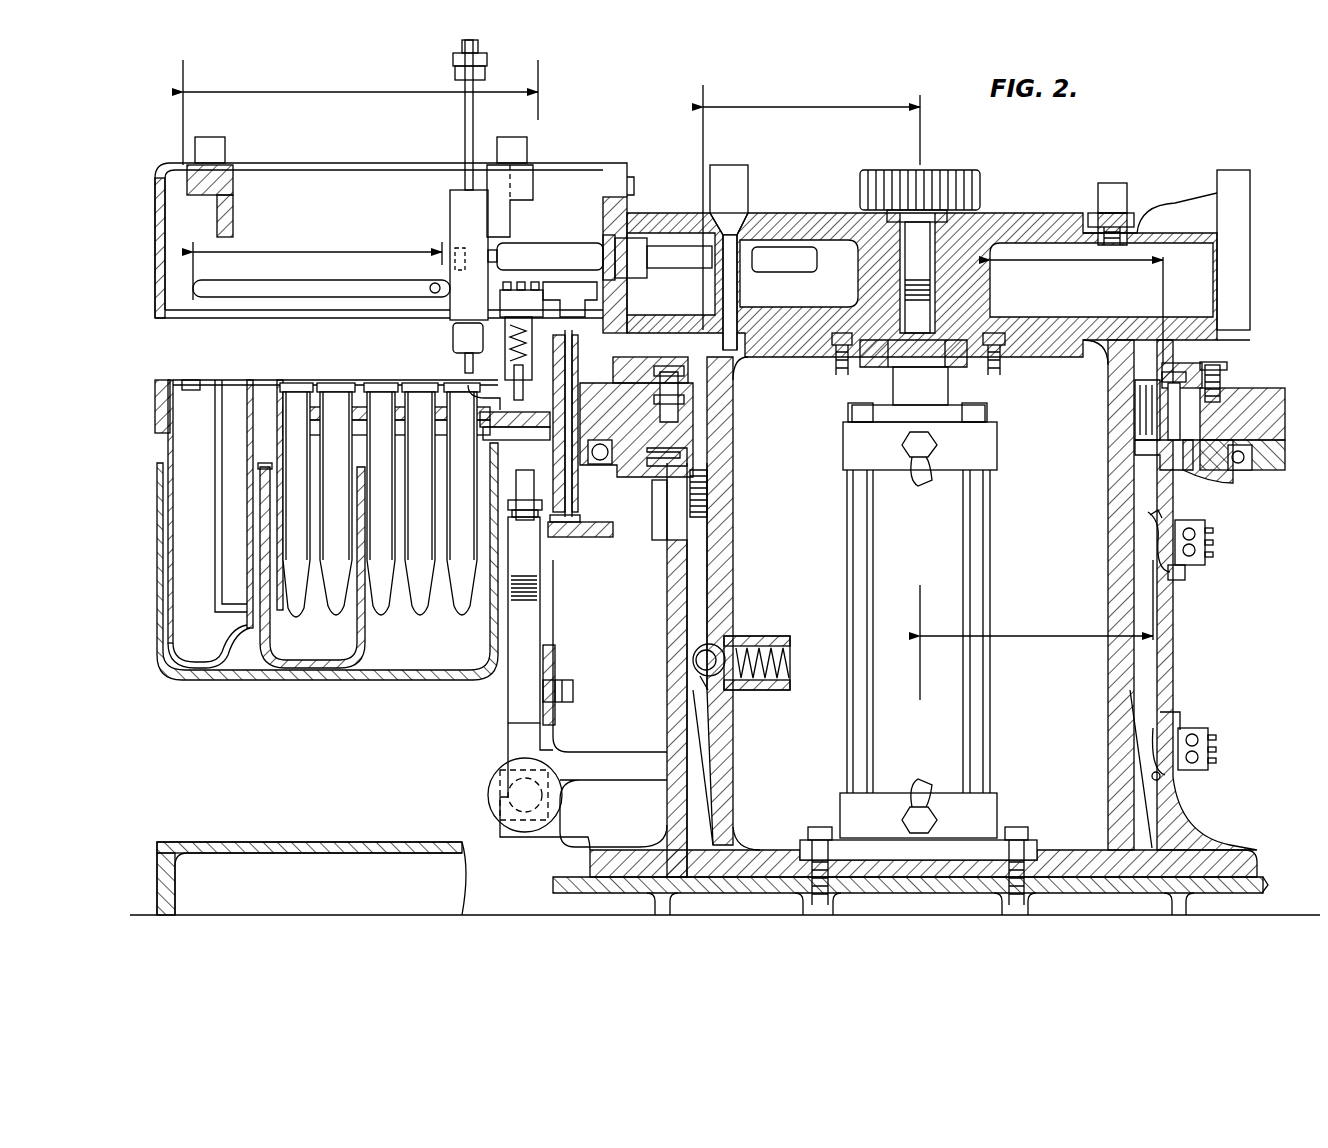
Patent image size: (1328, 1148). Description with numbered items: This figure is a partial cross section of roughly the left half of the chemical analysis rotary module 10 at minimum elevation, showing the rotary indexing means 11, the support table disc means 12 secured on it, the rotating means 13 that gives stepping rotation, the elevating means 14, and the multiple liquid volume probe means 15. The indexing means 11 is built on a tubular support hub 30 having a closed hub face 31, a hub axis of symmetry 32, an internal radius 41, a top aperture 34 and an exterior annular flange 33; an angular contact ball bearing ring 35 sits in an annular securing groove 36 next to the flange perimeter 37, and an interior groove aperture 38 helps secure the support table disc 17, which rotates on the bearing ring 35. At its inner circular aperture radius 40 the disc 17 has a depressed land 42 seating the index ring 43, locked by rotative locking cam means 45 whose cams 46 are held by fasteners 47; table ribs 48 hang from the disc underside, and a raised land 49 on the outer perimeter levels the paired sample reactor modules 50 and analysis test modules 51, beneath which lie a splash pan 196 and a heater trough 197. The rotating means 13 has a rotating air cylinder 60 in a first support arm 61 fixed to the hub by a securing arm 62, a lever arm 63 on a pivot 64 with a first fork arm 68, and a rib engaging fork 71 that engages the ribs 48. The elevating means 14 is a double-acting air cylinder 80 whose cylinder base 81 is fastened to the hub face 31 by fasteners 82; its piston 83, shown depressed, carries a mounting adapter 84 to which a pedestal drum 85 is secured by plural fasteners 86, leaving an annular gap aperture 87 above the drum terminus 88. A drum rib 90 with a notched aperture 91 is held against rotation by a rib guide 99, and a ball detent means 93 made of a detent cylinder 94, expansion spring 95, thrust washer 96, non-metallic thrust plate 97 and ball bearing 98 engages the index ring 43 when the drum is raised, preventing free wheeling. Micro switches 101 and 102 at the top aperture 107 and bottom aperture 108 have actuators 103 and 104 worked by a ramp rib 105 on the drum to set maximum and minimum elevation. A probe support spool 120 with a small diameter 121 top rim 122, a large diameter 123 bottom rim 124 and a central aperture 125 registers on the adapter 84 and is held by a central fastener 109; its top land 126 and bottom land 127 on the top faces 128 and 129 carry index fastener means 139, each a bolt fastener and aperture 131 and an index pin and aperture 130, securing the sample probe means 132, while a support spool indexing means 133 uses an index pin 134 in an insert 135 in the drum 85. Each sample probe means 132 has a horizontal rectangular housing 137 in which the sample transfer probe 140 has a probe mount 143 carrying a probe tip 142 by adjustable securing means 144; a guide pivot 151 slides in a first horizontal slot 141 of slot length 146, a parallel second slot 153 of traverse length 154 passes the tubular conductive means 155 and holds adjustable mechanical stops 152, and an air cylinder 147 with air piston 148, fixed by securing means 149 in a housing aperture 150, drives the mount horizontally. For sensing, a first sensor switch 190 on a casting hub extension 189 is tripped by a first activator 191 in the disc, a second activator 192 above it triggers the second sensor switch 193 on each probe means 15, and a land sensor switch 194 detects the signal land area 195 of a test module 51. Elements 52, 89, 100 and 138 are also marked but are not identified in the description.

The chemical analysis rotary module 10 is at (1165, 143).
The rotary indexing means 11 is at (1210, 608).
The support table disc means 12 is at (198, 367).
The rotating means 13 is at (498, 703).
The elevating means 14 is at (1005, 398).
The multiple liquid volume probe means 15 is at (325, 180).
The support table disc 17 is at (1180, 440).
The tubular support hub 30 is at (1173, 680).
The closed hub face 31 is at (1040, 870).
The tubular hub axis of symmetry 32 is at (921, 136).
The exterior annular flange 33 is at (1195, 468).
The support hub top aperture 34 is at (1285, 428).
The angular contact ball bearing ring 35 is at (1252, 458).
The annular securing groove 36 is at (1232, 470).
The annular flange perimeter 37 is at (1235, 474).
The interior groove aperture 38 is at (1170, 460).
The inner circular aperture radius 40 is at (1085, 265).
The internal radius 41 is at (1058, 640).
The depressed land 42 is at (1283, 398).
The index ring 43 is at (1148, 425).
The rotative locking cam means 45 is at (1163, 470).
The cams 46 is at (690, 456).
The fasteners 47 is at (1170, 383).
The table rib 48 is at (448, 430).
The raised land 49 is at (275, 385).
The sample reactor modules 50 is at (210, 470).
The analysis test modules 51 is at (334, 395).
The stud bolt 52 is at (1222, 364).
The rotating air cylinder 60 is at (488, 797).
The first support arm 61 is at (495, 785).
The securing arm 62 is at (580, 758).
The lever arm 63 is at (540, 612).
The pivot 64 is at (575, 680).
The first fork arm 68 is at (555, 650).
The rib engaging fork 71 is at (524, 492).
The elevating double-acting air cylinder 80 is at (918, 620).
The cylinder base 81 is at (1032, 845).
The fasteners 82 is at (820, 827).
The piston 83 is at (918, 360).
The mounting adapter 84 is at (862, 360).
The pedestal drum 85 is at (720, 490).
The plural fasteners 86 is at (828, 362).
The annular gap aperture 87 is at (742, 852).
The drum terminus 88 is at (725, 845).
The base fillet 89 is at (752, 858).
The drum ribs 90 is at (702, 537).
The notched apertures 91 is at (700, 650).
The ball detent means 93 is at (758, 690).
The detent cylinder 94 is at (762, 636).
The expansion spring 95 is at (770, 690).
The thrust washer 96 is at (790, 655).
The non-metallic thrust plate 97 is at (728, 672).
The ball bearing 98 is at (718, 645).
The rib guides 99 is at (712, 512).
The housing foot 100 is at (688, 822).
The micro switch 101 is at (1215, 540).
The micro switch 102 is at (1215, 752).
The switch actuator 103 is at (1150, 520).
The switch actuator 104 is at (1158, 770).
The ramp rib 105 is at (1140, 748).
The top aperture 107 is at (1185, 570).
The bottom aperture 108 is at (1175, 715).
The central fastener 109 is at (945, 170).
The probe support spool 120 is at (993, 248).
The small diameter 121 is at (818, 107).
The top rim 122 is at (800, 230).
The large diameter 123 is at (806, 288).
The bottom rim 124 is at (780, 280).
The central aperture 125 is at (915, 228).
The top land 126 is at (748, 214).
The bottom land 127 is at (656, 288).
The top face 128 is at (985, 213).
The top face 129 is at (1082, 322).
The index pin and aperture 130 is at (1245, 335).
The bolt fastener and aperture 131 is at (1095, 185).
The sample probe means 132 is at (608, 150).
The support spool indexing means 133 is at (723, 300).
The index pin 134 is at (736, 257).
The insert 135 is at (738, 364).
The horizontal rectangular housing 137 is at (155, 272).
The slide housing 138 is at (672, 213).
The index fastener means 139 is at (1130, 238).
The sample transfer probe 140 is at (450, 242).
The first horizontal slot 141 is at (250, 297).
The probe tip 142 is at (470, 385).
The probe mount 143 is at (468, 273).
The adjustable securing means 144 is at (453, 338).
The slot length 146 is at (322, 252).
The air cylinder 147 is at (600, 256).
The air piston 148 is at (470, 250).
The air cylinder securing means 149 is at (612, 238).
The housing aperture 150 is at (612, 240).
The guide pivot 151 is at (430, 285).
The adjustable mechanical stops 152 is at (195, 180).
The second slot 153 is at (255, 162).
The second slot traverse length 154 is at (352, 92).
The tubular conductive means 155 is at (465, 128).
The casting hub extension 189 is at (572, 520).
The first sensor switch 190 is at (563, 538).
The first sensor switch activator 191 is at (600, 535).
The second sensor switch activator 192 is at (578, 390).
The second sensor switch 193 is at (547, 341).
The land sensor switch 194 is at (515, 427).
The signal land area 195 is at (505, 395).
The splash pan 196 is at (235, 680).
The heater trough 197 is at (362, 660).